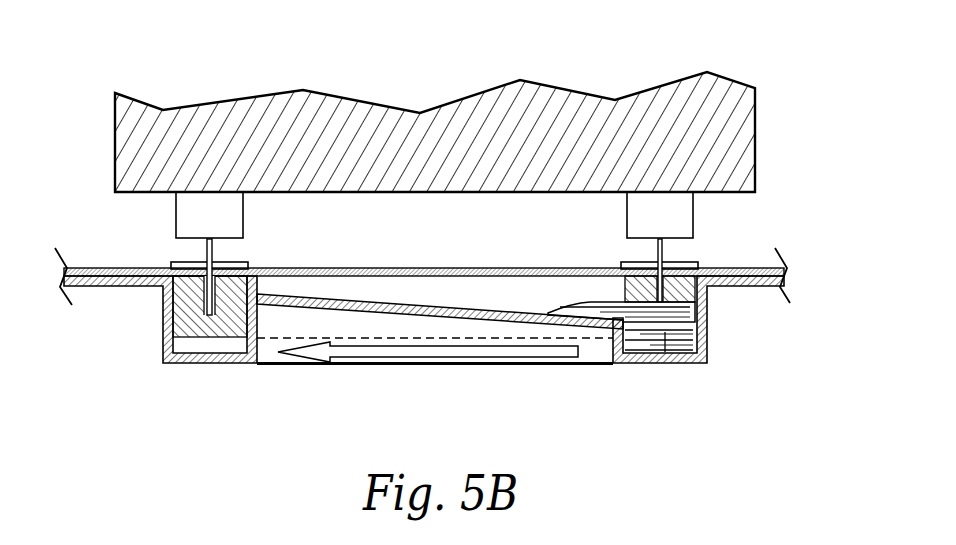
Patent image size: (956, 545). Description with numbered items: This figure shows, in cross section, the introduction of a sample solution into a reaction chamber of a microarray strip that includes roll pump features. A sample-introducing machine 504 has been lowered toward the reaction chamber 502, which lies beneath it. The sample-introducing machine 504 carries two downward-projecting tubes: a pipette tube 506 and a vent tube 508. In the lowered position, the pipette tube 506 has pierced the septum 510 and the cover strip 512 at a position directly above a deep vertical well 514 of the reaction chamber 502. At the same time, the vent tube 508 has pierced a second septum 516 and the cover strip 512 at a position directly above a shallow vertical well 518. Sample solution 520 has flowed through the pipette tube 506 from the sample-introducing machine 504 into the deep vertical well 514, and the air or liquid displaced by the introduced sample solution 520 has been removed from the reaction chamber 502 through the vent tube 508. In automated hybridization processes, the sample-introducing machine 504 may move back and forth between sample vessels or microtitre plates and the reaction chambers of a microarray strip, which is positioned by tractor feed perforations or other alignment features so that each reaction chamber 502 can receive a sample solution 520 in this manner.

The reaction chamber 502 is at (595, 365).
The sample-introducing machine 504 is at (755, 120).
The pipette tube 506 is at (657, 260).
The vent tube 508 is at (212, 257).
The septum 510 is at (706, 264).
The cover strip 512 is at (788, 272).
The deep vertical well 514 is at (707, 293).
The septum 516 is at (167, 266).
The shallow vertical well 518 is at (188, 316).
The sample solution 520 is at (673, 363).